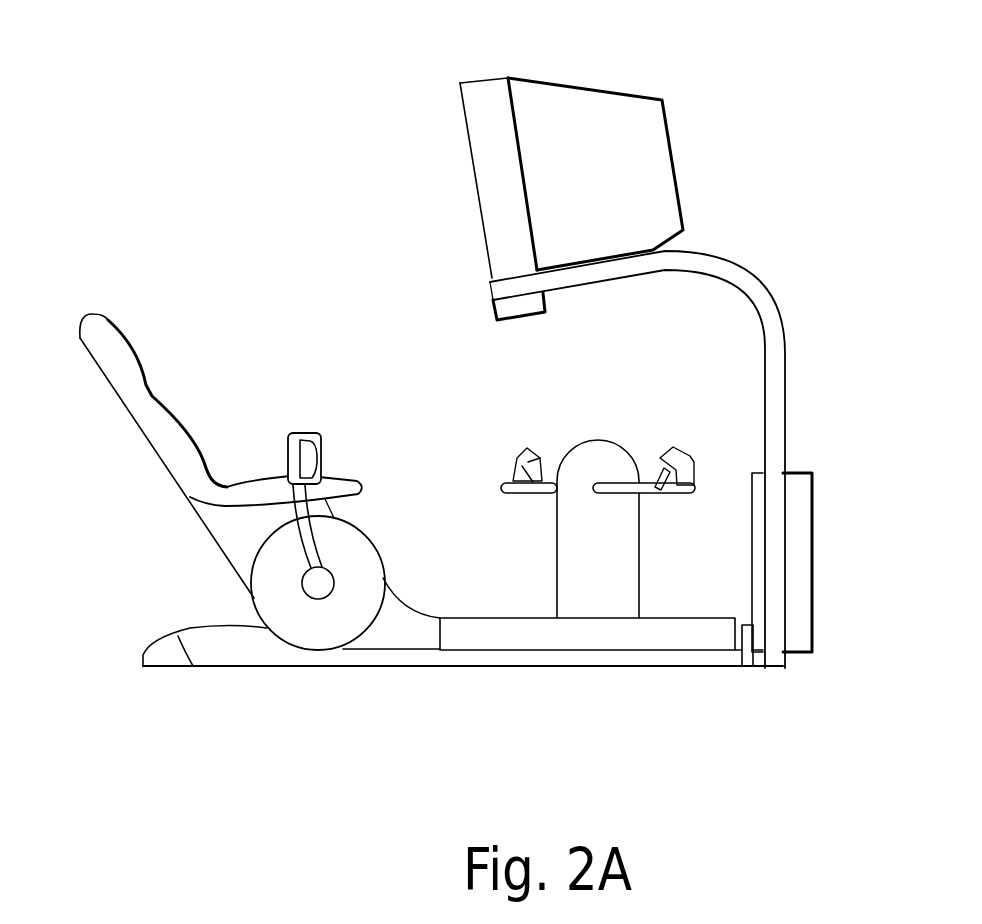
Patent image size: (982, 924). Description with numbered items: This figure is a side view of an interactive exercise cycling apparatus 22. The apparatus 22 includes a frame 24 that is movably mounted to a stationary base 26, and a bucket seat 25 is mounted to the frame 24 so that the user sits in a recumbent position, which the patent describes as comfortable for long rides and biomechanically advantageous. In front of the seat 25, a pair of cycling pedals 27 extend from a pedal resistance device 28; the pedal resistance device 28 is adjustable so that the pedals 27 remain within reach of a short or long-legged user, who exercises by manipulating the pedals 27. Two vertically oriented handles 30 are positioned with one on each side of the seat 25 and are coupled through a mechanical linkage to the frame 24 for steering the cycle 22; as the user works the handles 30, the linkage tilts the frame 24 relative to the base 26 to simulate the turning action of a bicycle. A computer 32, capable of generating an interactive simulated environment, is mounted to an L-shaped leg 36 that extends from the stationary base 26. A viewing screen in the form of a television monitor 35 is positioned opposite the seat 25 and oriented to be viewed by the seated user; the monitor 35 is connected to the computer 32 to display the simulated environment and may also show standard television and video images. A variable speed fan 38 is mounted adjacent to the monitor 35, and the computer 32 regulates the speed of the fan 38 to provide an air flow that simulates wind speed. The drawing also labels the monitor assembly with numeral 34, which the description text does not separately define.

The exercise cycling apparatus 22 is at (203, 267).
The frame 24 is at (503, 638).
The bucket seat 25 is at (98, 373).
The stationary base 26 is at (188, 630).
The cycling pedals 27 is at (667, 452).
The pedal resistance device 28 is at (613, 548).
The handles 30 is at (305, 431).
The computer 32 is at (812, 533).
The monitor 34 is at (562, 84).
The television monitor 35 is at (470, 163).
The L-shaped leg 36 is at (748, 275).
The variable speed fan 38 is at (492, 314).